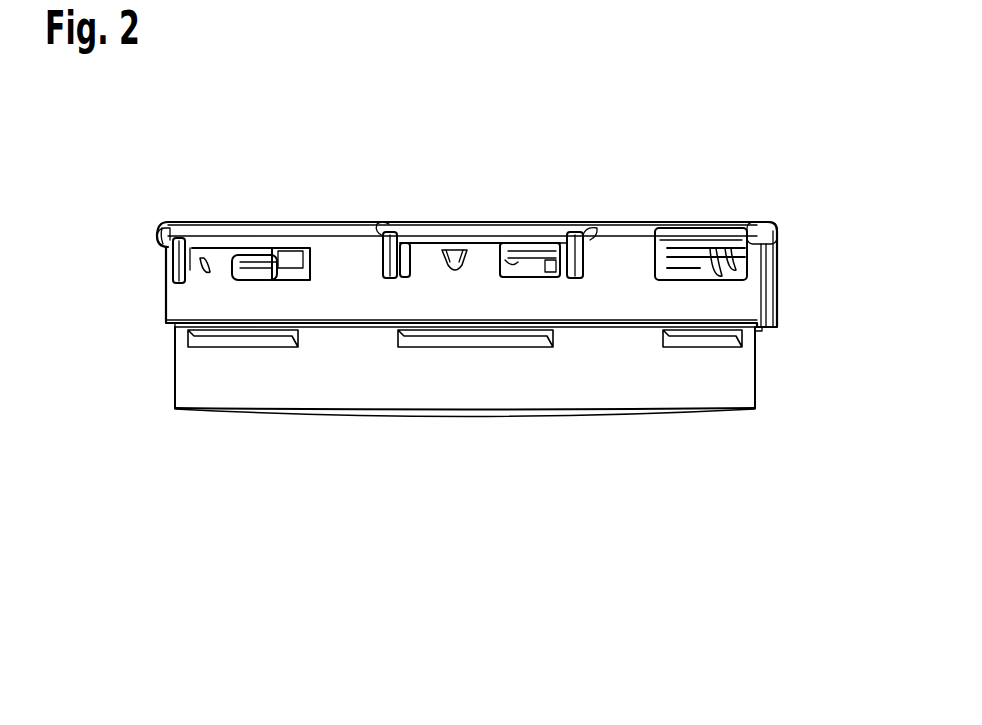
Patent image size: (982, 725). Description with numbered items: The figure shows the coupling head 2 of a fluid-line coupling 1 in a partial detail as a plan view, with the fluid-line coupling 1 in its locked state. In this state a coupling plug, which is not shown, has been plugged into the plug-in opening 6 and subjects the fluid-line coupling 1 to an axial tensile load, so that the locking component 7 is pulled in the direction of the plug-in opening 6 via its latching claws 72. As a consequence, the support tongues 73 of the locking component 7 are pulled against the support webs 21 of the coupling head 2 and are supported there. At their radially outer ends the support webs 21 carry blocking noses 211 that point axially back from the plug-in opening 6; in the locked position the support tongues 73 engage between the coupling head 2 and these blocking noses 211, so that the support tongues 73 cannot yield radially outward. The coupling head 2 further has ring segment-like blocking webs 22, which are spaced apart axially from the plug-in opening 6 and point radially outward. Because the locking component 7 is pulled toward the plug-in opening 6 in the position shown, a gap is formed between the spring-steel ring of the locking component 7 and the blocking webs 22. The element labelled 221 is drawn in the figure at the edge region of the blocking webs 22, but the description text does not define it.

The fluid-line coupling 1 is at (828, 117).
The coupling head 2 is at (202, 378).
The plug-in opening 6 is at (569, 203).
The locking component 7 is at (728, 299).
The support web 21 is at (170, 225).
The blocking web 22 is at (243, 332).
The latching claw 72 is at (222, 263).
The support tongue 73 is at (357, 255).
The blocking nose 211 is at (155, 243).
The edge of latching opening 221 is at (165, 338).